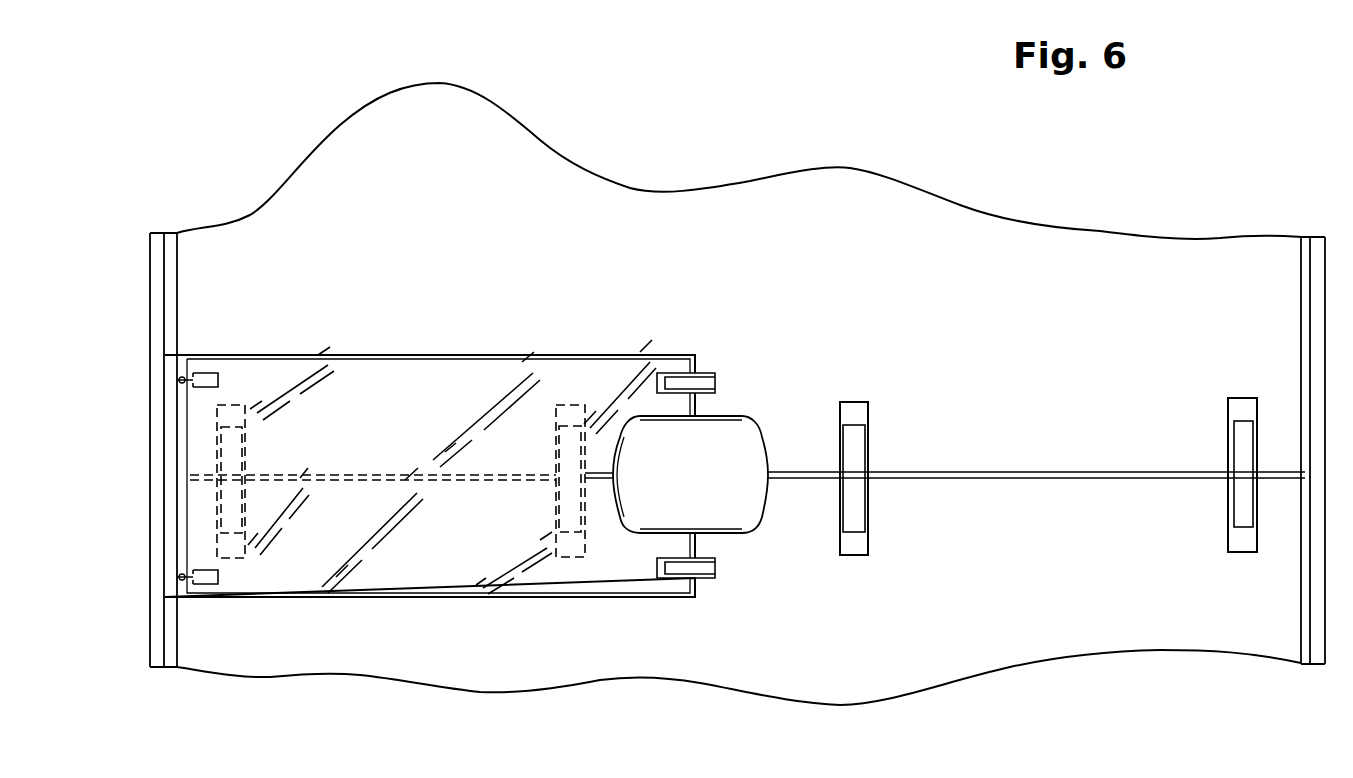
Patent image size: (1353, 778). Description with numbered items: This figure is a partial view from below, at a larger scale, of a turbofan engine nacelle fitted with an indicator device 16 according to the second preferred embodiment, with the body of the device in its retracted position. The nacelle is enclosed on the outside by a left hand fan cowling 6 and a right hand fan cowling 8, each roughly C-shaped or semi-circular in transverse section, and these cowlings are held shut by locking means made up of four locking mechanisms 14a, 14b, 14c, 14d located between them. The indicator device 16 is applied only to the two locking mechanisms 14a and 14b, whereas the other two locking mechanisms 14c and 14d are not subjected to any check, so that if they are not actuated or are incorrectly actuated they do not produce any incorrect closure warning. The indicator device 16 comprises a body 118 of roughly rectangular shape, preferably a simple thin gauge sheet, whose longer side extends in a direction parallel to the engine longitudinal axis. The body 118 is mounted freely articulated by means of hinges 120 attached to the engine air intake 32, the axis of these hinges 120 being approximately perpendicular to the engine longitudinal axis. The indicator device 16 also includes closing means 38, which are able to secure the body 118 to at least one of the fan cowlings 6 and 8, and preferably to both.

The left hand fan cowling 6 is at (302, 215).
The right hand fan cowling 8 is at (329, 635).
The engine air intake 32 is at (170, 663).
The indicator device 16 is at (486, 624).
The body 118 is at (455, 385).
The closing means 38 is at (677, 383).
The hinges 120 is at (193, 371).
The locking mechanism 14a is at (222, 512).
The locking mechanism 14b is at (573, 518).
The locking mechanism 14c is at (853, 522).
The locking mechanism 14d is at (1243, 517).